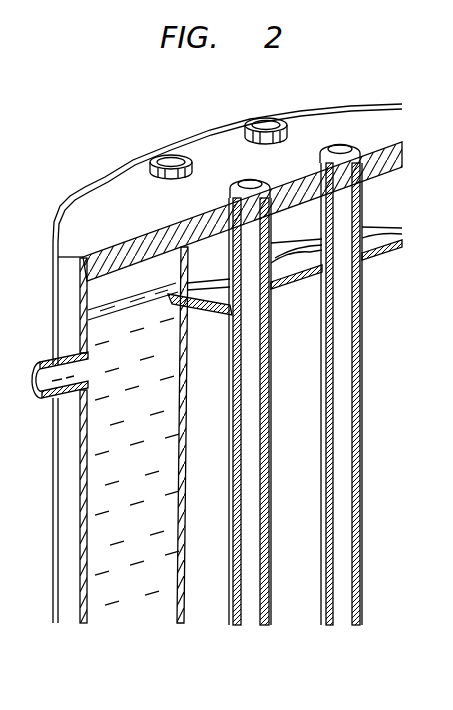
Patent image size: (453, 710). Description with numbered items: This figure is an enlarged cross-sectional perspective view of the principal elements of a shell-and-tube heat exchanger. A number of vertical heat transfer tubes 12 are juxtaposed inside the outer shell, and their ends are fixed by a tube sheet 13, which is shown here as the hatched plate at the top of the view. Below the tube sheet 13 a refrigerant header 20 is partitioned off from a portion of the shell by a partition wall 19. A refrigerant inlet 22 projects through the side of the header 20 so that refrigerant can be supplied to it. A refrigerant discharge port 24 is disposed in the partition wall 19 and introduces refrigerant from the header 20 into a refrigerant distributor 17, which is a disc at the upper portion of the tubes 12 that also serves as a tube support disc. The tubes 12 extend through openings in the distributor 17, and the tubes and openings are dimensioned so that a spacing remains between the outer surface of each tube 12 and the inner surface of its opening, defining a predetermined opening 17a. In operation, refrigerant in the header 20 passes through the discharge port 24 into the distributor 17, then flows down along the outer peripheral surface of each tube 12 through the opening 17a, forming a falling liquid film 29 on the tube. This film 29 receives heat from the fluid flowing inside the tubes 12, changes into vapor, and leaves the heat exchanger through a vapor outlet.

The heat transfer tube 12 is at (357, 426).
The tube sheet 13 is at (55, 232).
The refrigerant distributor 17 is at (388, 229).
The opening 17a is at (228, 275).
The partition wall 19 is at (183, 597).
The refrigerant header 20 is at (97, 292).
The refrigerant inlet 22 is at (42, 368).
The refrigerant discharge port 24 is at (181, 278).
The liquid film 29 is at (227, 597).